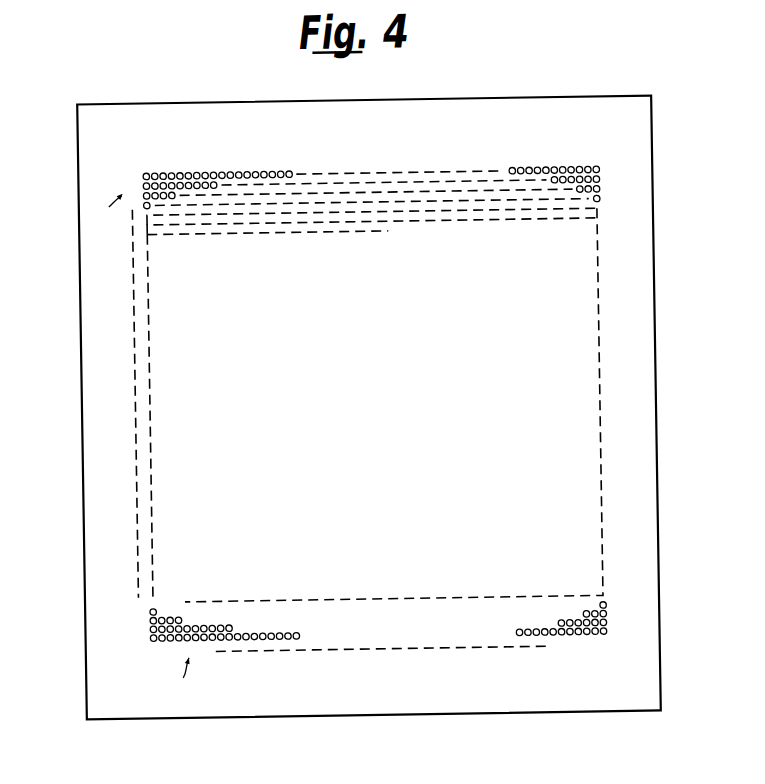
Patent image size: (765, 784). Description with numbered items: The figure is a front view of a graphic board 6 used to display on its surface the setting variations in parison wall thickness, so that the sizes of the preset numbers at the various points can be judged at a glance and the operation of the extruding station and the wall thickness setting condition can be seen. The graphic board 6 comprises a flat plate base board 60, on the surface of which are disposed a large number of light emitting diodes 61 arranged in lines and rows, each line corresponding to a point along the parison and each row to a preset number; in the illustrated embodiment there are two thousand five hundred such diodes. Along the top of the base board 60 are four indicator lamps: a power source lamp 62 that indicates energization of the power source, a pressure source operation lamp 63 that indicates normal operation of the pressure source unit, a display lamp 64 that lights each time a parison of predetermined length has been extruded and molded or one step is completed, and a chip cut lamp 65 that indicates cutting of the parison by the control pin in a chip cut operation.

The graphic board 6 is at (78, 496).
The flat plate base board 60 is at (651, 396).
The light emitting diodes 61 is at (604, 202).
The power source lamp 62 is at (194, 136).
The pressure source operation lamp 63 is at (264, 137).
The display lamp 64 is at (491, 136).
The chip cut lamp 65 is at (563, 136).